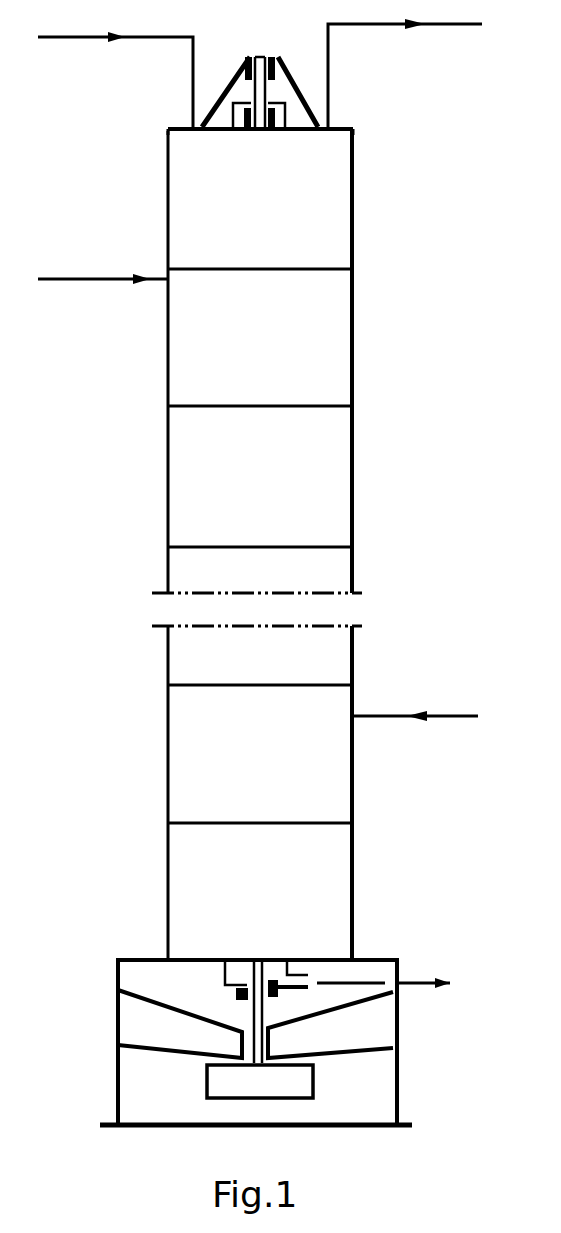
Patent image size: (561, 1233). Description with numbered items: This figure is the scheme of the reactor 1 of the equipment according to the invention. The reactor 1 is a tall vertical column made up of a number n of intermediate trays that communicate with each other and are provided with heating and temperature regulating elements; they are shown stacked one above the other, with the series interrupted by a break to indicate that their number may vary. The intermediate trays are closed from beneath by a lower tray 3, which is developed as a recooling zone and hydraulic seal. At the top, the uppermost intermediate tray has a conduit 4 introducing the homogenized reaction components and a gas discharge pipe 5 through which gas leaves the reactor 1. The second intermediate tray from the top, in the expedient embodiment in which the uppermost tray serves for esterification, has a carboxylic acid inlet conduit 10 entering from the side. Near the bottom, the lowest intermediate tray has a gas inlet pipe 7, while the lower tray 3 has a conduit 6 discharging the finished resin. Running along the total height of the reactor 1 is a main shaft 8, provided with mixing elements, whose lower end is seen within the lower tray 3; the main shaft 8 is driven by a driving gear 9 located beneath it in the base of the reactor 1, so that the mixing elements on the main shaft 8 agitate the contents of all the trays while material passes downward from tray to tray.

The reactor 1 is at (353, 352).
The lower tray 3 is at (177, 905).
The conduit 4 is at (92, 38).
The gas discharge pipe 5 is at (437, 25).
The conduit 6 is at (420, 987).
The gas inlet pipe 7 is at (386, 715).
The main shaft 8 is at (257, 1018).
The driving gear 9 is at (288, 1083).
The carboxylic acid inlet conduit 10 is at (103, 295).